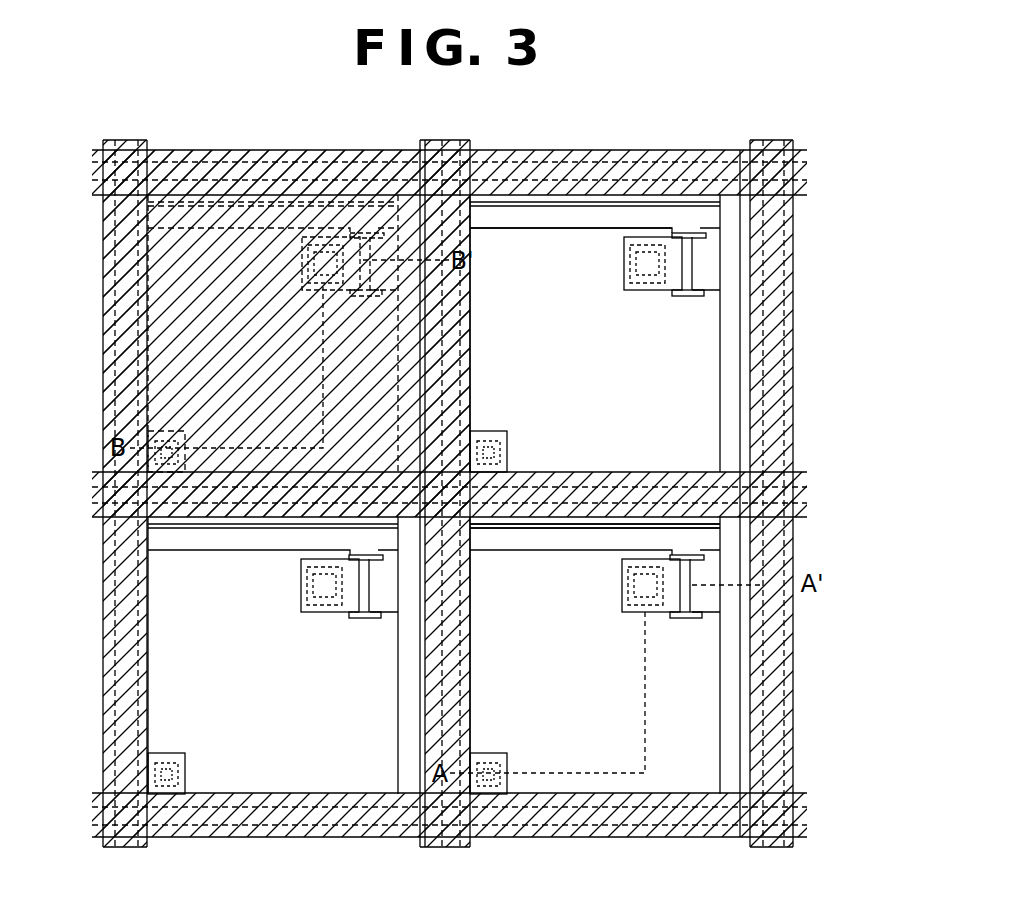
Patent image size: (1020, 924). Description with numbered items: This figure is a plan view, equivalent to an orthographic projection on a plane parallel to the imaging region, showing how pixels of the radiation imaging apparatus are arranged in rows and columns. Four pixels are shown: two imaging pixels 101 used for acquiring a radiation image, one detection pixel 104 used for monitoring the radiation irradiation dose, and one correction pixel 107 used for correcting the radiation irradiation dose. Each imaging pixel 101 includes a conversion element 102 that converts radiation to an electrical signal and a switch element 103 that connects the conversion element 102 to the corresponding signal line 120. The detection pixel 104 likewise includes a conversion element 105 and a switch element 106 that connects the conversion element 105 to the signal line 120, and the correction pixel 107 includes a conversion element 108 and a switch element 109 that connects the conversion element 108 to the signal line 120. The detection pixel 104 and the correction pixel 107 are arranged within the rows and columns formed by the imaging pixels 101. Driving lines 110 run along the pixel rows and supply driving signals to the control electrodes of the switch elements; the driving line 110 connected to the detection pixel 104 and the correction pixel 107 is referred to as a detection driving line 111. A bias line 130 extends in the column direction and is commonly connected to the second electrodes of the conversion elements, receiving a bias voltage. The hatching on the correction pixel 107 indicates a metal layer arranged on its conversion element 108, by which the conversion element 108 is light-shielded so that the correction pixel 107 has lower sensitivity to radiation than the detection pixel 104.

The imaging pixel 101 is at (80, 508).
The conversion element 102 is at (797, 655).
The switch element 103 is at (688, 620).
The detection pixel 104 is at (844, 172).
The conversion element 105 is at (797, 363).
The switch element 106 is at (688, 237).
The correction pixel 107 is at (80, 172).
The conversion element 108 is at (215, 150).
The switch element 109 is at (352, 237).
The driving line 110 is at (800, 541).
The detection driving line 111 is at (798, 218).
The signal line 120 is at (735, 150).
The bias line 130 is at (553, 150).